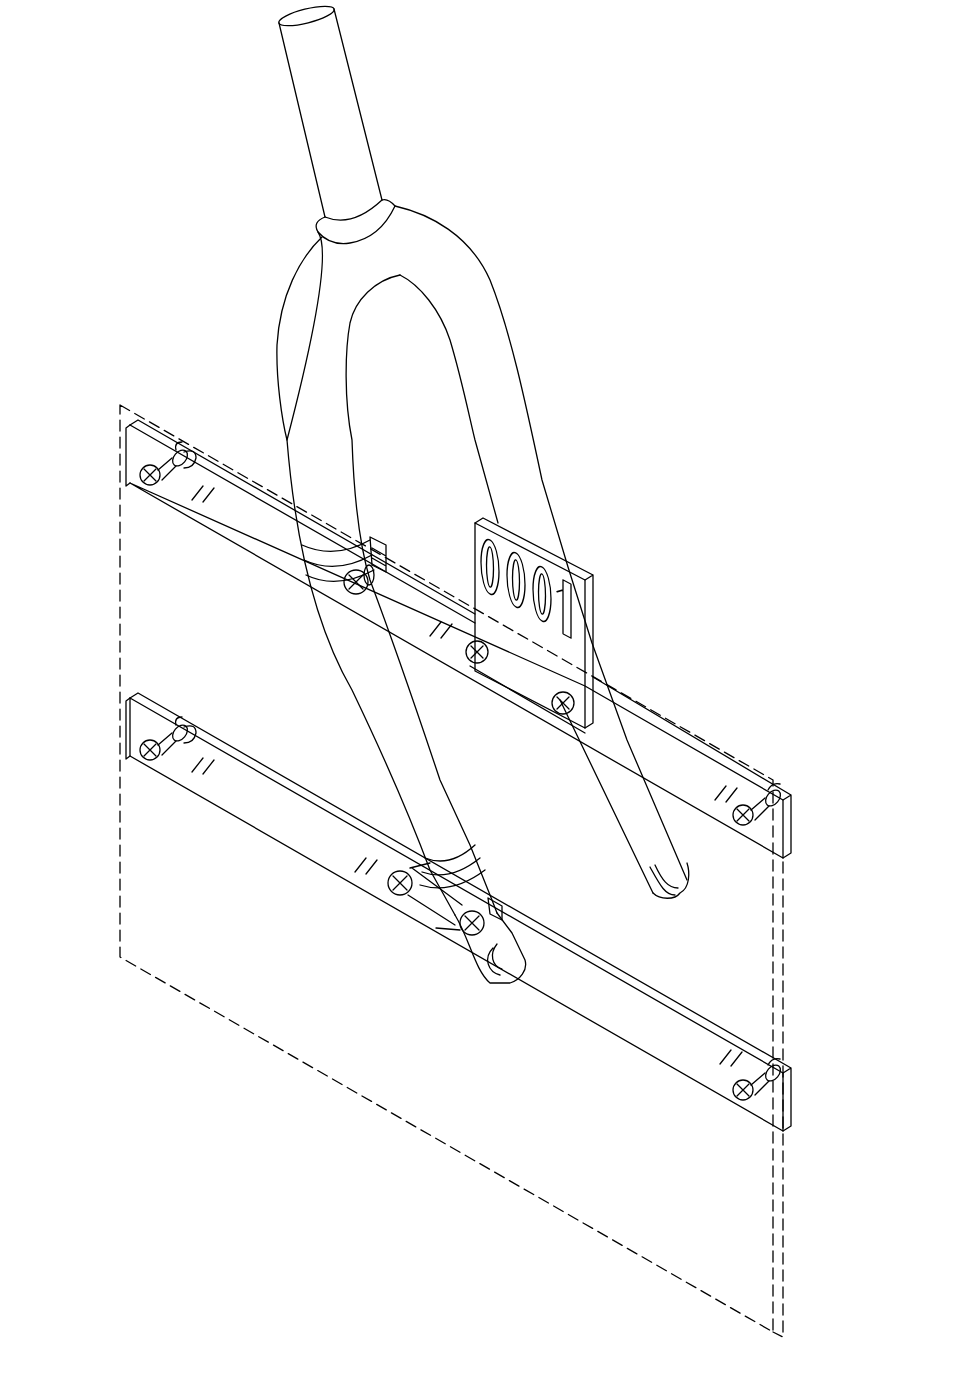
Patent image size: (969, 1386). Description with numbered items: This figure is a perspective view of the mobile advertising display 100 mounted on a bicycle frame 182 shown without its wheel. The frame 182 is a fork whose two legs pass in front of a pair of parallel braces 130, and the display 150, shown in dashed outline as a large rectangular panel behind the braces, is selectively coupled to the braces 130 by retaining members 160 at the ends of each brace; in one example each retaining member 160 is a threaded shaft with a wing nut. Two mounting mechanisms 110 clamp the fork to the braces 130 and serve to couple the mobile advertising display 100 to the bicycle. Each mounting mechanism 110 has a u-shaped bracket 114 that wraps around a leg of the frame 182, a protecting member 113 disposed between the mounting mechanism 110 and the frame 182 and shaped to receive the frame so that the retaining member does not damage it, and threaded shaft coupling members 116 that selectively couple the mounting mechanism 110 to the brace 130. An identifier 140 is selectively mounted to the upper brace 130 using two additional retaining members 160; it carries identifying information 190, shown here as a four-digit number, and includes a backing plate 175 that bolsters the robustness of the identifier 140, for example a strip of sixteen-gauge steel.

The mobile advertising display 100 is at (258, 1174).
The mounting mechanism 110 is at (403, 724).
The protecting member 113 is at (378, 550).
The u-shaped bracket 114 is at (322, 565).
The threaded shaft coupling member 116 is at (346, 588).
The brace 130 is at (222, 521).
The identifier 140 is at (568, 623).
The display 150 is at (126, 960).
The retaining members 160 is at (142, 480).
The backing plate 175 is at (520, 686).
The frame 182 is at (443, 232).
The identifying information 190 is at (580, 620).